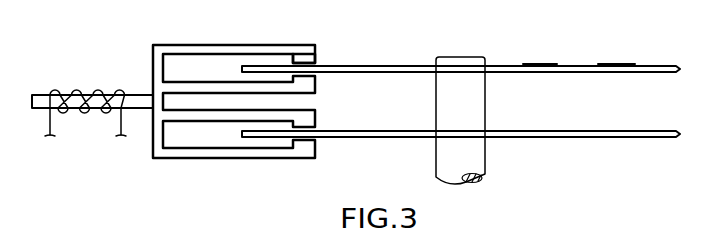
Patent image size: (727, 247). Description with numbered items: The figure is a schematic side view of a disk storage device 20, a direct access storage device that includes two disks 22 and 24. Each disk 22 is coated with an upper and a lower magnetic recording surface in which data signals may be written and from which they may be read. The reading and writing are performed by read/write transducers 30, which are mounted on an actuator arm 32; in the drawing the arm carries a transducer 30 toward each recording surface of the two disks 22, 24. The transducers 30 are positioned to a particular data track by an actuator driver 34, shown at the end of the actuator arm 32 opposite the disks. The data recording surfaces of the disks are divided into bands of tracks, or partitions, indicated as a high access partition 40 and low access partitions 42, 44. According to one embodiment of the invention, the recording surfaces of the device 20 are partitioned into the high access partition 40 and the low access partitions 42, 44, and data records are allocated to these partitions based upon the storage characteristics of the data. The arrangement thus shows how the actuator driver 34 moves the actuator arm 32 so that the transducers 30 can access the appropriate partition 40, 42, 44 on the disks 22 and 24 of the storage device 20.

The disk storage device 20 is at (420, 101).
The disk 22 is at (651, 67).
The disk 24 is at (651, 133).
The read/write transducer 30 is at (317, 62).
The actuator arm 32 is at (212, 45).
The actuator driver 34 is at (82, 102).
The high access partition 40 is at (592, 55).
The low access partition 42 is at (557, 55).
The low access partition 44 is at (635, 55).